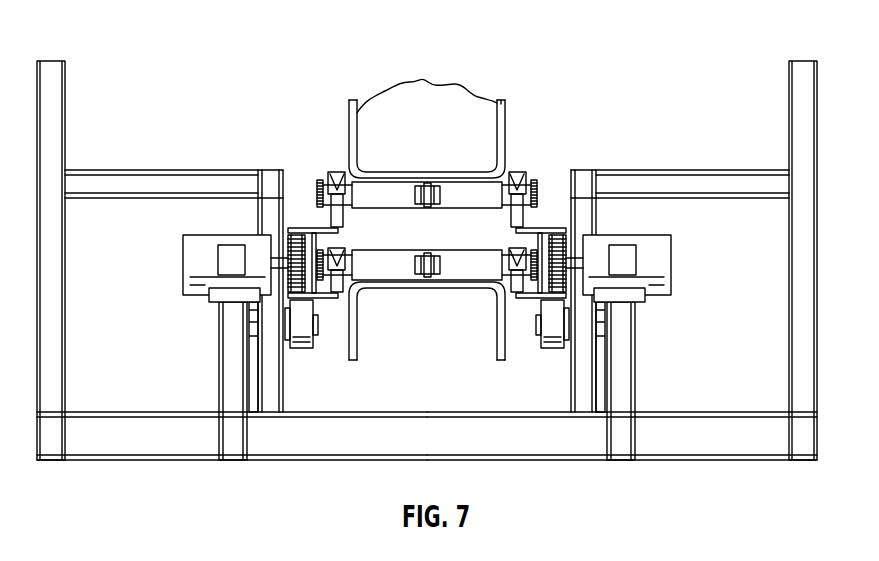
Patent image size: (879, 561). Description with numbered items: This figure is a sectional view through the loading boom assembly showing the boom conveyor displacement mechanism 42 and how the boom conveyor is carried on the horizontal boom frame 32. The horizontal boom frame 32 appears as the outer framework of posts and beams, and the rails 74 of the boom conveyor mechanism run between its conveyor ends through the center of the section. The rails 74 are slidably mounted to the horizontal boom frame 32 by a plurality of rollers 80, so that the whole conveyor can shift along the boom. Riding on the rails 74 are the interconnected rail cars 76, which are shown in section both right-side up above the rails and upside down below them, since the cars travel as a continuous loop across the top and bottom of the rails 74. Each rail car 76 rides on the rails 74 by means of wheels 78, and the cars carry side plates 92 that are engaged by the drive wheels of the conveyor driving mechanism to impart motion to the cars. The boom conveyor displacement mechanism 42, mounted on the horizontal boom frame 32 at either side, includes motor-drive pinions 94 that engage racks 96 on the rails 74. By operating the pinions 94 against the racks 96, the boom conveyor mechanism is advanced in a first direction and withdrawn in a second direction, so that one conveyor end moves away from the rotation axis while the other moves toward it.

The horizontal boom frame 32 is at (135, 66).
The boom conveyor displacement mechanism 42 is at (241, 214).
The rails 74 is at (300, 178).
The rail cars 76 is at (533, 92).
The wheels 78 is at (337, 178).
The rollers 80 is at (298, 325).
The side plates 92 is at (543, 165).
The motor-drive pinions 94 is at (305, 265).
The racks 96 is at (342, 231).